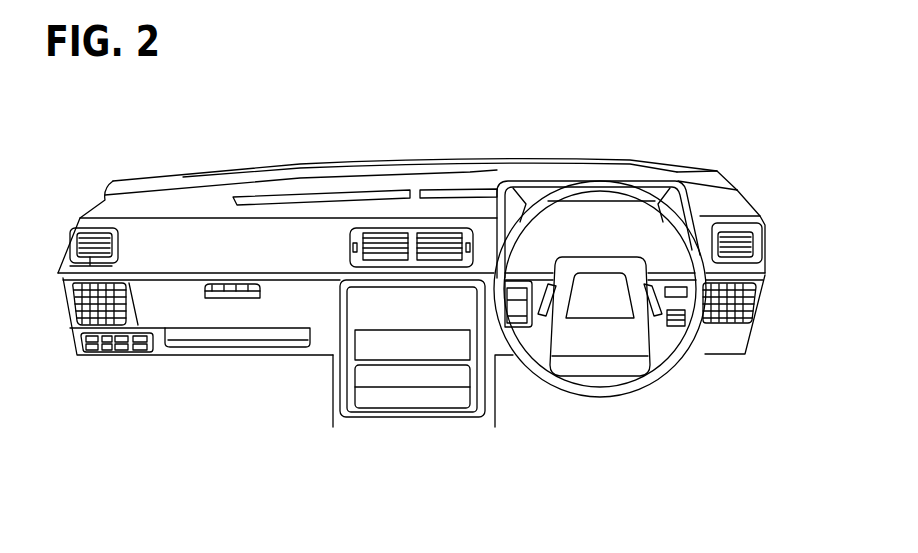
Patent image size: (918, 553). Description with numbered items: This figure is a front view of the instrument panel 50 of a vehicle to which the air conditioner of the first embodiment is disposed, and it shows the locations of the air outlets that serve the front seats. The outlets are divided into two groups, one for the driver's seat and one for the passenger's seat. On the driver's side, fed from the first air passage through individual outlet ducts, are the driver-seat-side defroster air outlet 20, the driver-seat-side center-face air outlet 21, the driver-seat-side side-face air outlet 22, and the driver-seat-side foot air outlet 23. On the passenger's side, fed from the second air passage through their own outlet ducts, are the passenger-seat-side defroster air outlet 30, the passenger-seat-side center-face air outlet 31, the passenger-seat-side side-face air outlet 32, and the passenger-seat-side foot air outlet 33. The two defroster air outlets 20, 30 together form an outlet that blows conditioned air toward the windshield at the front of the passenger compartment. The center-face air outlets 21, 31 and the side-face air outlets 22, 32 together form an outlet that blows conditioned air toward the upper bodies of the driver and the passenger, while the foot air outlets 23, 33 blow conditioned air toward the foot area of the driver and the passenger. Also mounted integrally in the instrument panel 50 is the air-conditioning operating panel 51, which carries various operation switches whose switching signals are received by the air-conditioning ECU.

The driver-seat-side defroster air outlet 20 is at (486, 195).
The driver-seat-side center-face air outlet 21 is at (438, 237).
The driver-seat-side side-face air outlet 22 is at (738, 235).
The driver-seat-side foot air outlet 23 is at (495, 395).
The passenger-seat-side defroster air outlet 30 is at (322, 197).
The passenger-seat-side center-face air outlet 31 is at (386, 237).
The passenger-seat-side side-face air outlet 32 is at (92, 237).
The passenger-seat-side foot air outlet 33 is at (333, 395).
The instrument panel 50 is at (294, 258).
The air-conditioning operating panel 51 is at (415, 345).